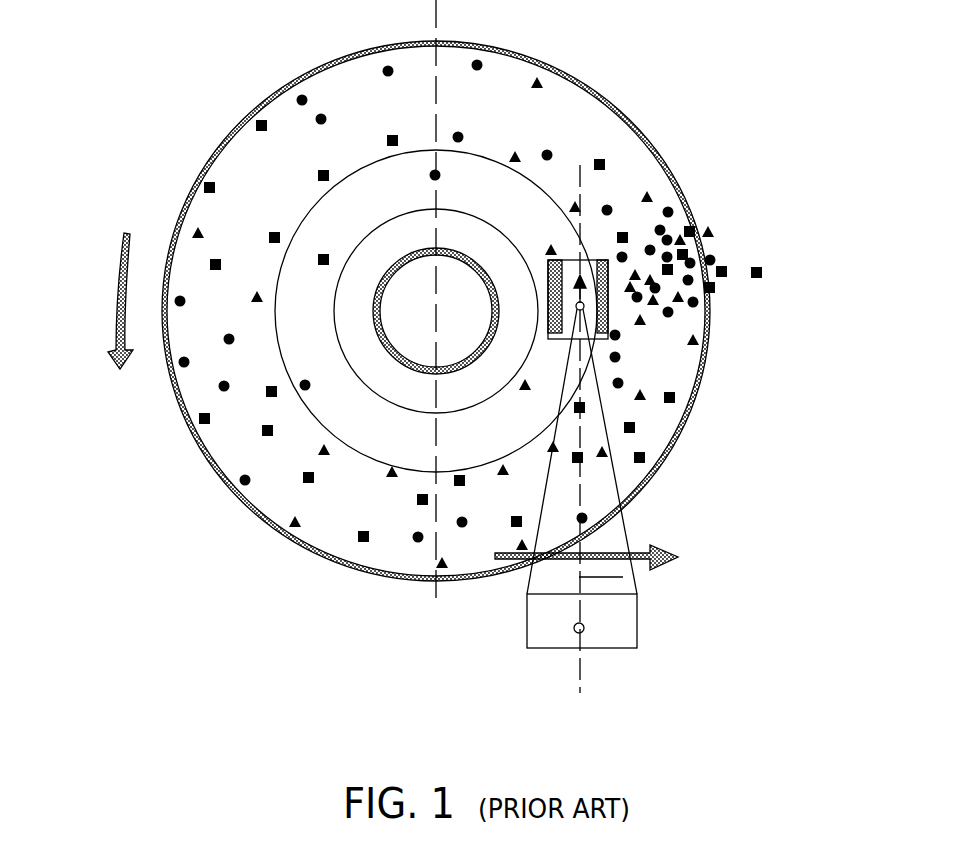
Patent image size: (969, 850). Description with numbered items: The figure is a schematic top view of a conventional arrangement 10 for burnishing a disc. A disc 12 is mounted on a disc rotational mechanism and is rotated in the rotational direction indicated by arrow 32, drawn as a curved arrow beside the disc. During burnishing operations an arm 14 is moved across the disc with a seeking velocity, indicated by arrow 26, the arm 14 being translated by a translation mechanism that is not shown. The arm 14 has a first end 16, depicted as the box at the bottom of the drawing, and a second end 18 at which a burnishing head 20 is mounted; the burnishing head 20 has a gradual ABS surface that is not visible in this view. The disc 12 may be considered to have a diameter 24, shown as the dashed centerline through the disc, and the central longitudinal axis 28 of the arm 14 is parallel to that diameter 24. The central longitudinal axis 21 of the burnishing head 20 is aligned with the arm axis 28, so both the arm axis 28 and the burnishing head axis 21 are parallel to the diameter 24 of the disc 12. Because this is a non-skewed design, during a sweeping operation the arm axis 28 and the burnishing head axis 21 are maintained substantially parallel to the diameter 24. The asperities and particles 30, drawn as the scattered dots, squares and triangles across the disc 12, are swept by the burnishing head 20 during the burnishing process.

The conventional arrangement 10 is at (845, 243).
The disc 12 is at (220, 142).
The arm 14 is at (623, 522).
The first end 16 is at (636, 662).
The second end 18 is at (552, 354).
The burnishing head 20 is at (568, 273).
The central longitudinal axis of the burnishing head 21 is at (580, 228).
The diameter 24 is at (433, 598).
The arrow 26 is at (644, 551).
The central longitudinal axis of the arm 28 is at (623, 577).
The asperities and particles 30 is at (388, 67).
The arrow 32 is at (114, 292).